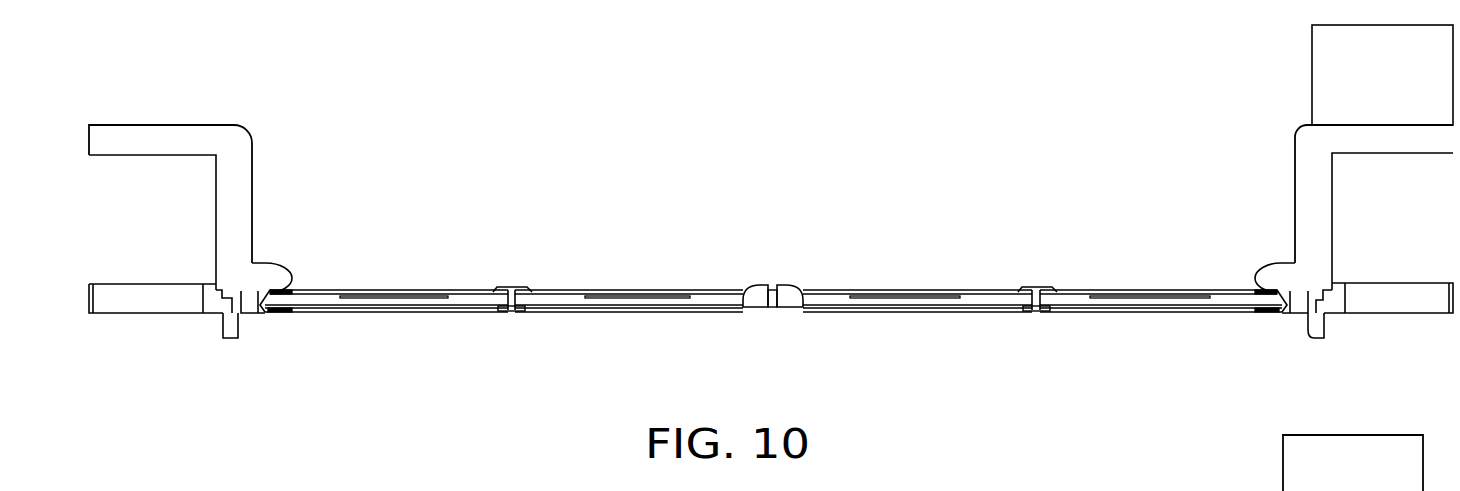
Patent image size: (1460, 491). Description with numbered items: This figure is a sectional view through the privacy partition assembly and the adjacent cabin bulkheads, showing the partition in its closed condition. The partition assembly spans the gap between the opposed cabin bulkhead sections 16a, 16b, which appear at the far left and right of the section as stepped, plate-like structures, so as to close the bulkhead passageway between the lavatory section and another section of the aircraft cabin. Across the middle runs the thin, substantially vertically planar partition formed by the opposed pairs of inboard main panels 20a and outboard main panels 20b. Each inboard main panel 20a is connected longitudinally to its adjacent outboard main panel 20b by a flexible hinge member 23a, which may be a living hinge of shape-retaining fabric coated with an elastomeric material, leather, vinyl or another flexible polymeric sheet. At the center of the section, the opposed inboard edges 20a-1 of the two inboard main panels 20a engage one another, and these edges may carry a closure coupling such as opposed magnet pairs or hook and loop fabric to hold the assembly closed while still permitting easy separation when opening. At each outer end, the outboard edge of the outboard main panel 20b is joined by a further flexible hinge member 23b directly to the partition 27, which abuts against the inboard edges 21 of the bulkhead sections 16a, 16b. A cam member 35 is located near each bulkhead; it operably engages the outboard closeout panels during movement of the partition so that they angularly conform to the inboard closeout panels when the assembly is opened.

The cabin bulkhead section 16a is at (1400, 302).
The cabin bulkhead section 16b is at (122, 301).
The inboard main panel 20a is at (648, 290).
The inboard edge 20a-1 is at (757, 287).
The outboard main panel 20b is at (399, 313).
The inboard edge 21 is at (203, 292).
The flexible hinge member 23a is at (512, 288).
The flexible hinge member 23b is at (264, 313).
The partition 27 is at (243, 312).
The cam member 35 is at (270, 266).